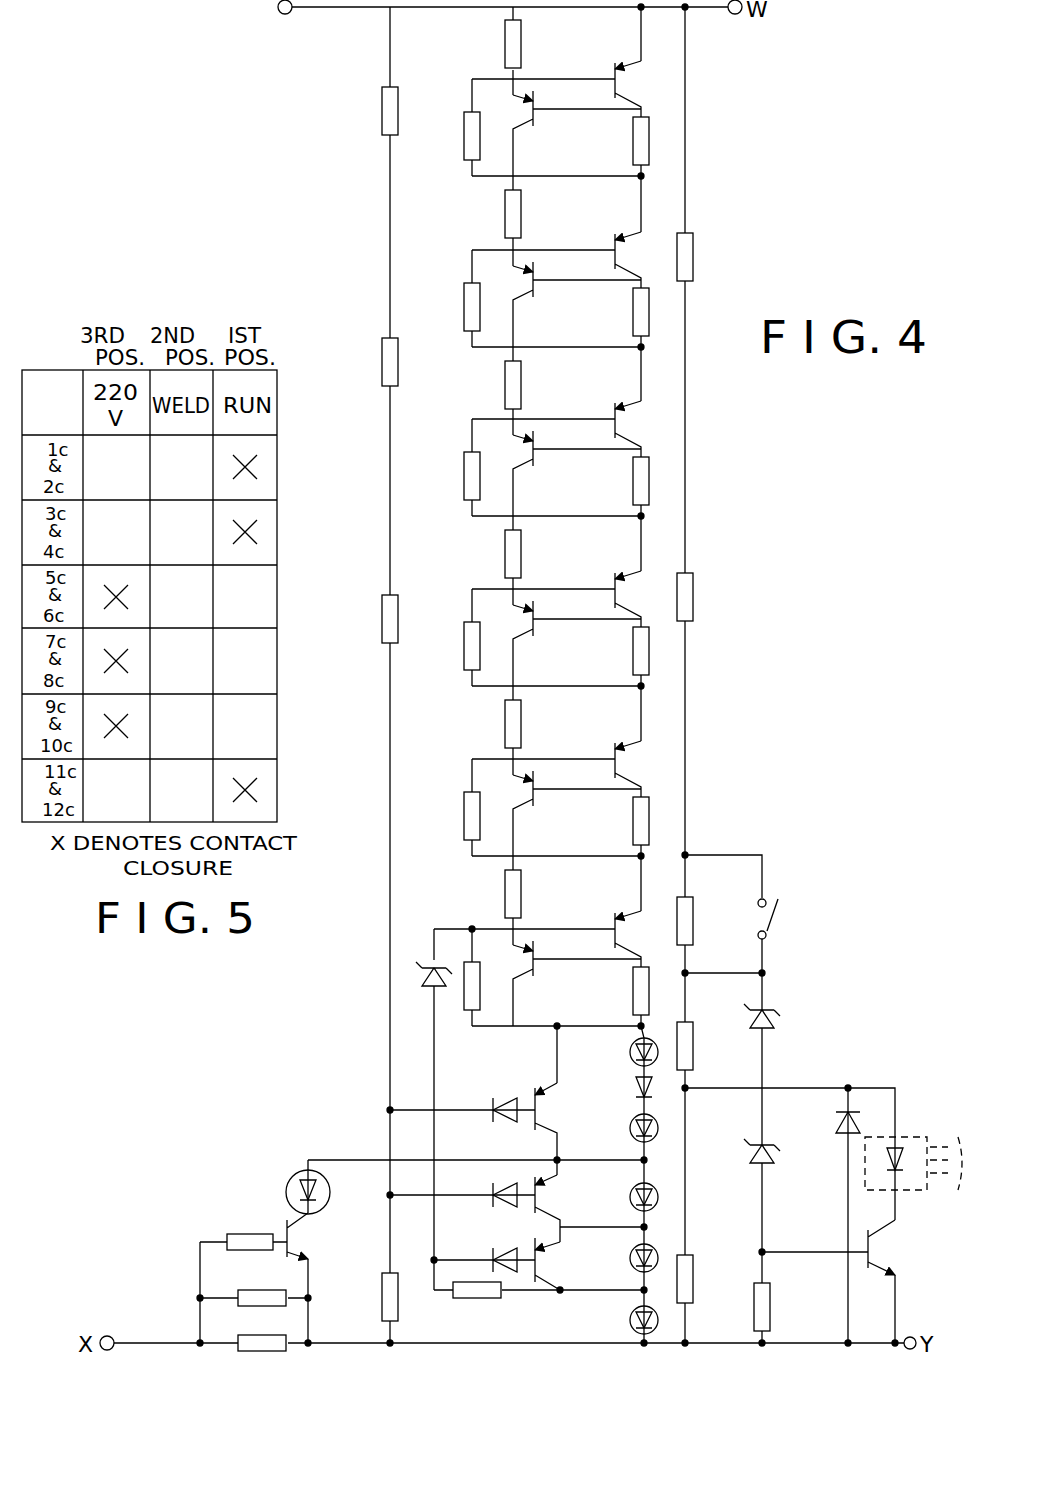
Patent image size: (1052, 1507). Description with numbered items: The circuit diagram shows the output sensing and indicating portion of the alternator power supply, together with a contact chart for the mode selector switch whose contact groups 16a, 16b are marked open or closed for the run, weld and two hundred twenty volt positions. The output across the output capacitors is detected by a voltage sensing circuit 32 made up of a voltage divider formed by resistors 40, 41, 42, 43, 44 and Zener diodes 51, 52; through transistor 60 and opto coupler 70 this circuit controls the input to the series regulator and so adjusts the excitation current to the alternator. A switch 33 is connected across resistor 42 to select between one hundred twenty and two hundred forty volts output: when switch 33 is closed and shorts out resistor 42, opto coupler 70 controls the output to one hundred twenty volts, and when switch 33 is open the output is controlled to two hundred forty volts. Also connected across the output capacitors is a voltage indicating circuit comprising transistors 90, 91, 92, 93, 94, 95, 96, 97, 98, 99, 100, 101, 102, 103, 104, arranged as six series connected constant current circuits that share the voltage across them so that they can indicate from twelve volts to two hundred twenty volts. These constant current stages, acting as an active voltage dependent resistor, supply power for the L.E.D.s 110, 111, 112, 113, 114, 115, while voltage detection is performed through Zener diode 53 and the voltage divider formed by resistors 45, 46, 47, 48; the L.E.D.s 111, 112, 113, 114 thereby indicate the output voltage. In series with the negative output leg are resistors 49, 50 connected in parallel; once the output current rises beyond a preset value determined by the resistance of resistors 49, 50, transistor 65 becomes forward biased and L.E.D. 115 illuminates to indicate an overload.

In FIG. 5, the relay contacts 16a is at (283, 627).
In FIG. 5, the relay contacts 16b is at (219, 660).
In FIG. 4, the voltage sensing circuit 32 is at (720, 145).
In FIG. 4, the switch 33 is at (773, 926).
In FIG. 4, the resistor 40 is at (693, 250).
In FIG. 4, the resistor 41 is at (693, 590).
In FIG. 4, the resistor 42 is at (693, 913).
In FIG. 4, the resistor 43 is at (693, 1042).
In FIG. 4, the resistor 44 is at (693, 1276).
In FIG. 4, the resistor 45 is at (385, 128).
In FIG. 4, the resistor 46 is at (382, 362).
In FIG. 4, the resistor 47 is at (388, 632).
In FIG. 4, the resistor 48 is at (384, 1300).
In FIG. 4, the resistor 49 is at (246, 1290).
In FIG. 4, the resistor 50 is at (258, 1334).
In FIG. 4, the Zener diode 51 is at (776, 1027).
In FIG. 4, the Zener diode 52 is at (777, 1160).
In FIG. 4, the Zener diode 53 is at (428, 993).
In FIG. 4, the transistor 60 is at (884, 1253).
In FIG. 4, the transistor 65 is at (309, 1229).
In FIG. 4, the opto coupler 70 is at (935, 1136).
In FIG. 4, the transistor 90 is at (628, 98).
In FIG. 4, the transistor 91 is at (527, 105).
In FIG. 4, the transistor 92 is at (634, 263).
In FIG. 4, the transistor 93 is at (527, 277).
In FIG. 4, the transistor 94 is at (631, 431).
In FIG. 4, the transistor 95 is at (527, 443).
In FIG. 4, the transistor 96 is at (632, 602).
In FIG. 4, the transistor 97 is at (527, 613).
In FIG. 4, the transistor 98 is at (631, 772).
In FIG. 4, the transistor 99 is at (527, 784).
In FIG. 4, the transistor 100 is at (640, 937).
In FIG. 4, the transistor 101 is at (527, 954).
In FIG. 4, the transistor 102 is at (562, 1129).
In FIG. 4, the transistor 103 is at (562, 1208).
In FIG. 4, the transistor 104 is at (562, 1264).
In FIG. 4, the light emitting diode 110 is at (630, 1053).
In FIG. 4, the L.E.D. 111 is at (630, 1128).
In FIG. 4, the L.E.D. 112 is at (630, 1199).
In FIG. 4, the L.E.D. 113 is at (630, 1259).
In FIG. 4, the L.E.D. 114 is at (630, 1320).
In FIG. 4, the L.E.D. 115 is at (300, 1172).